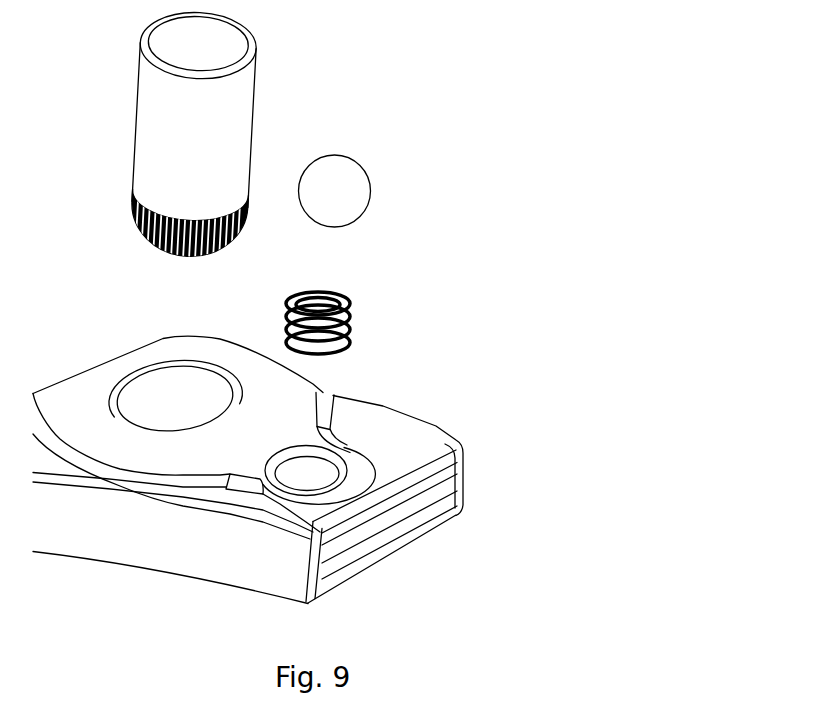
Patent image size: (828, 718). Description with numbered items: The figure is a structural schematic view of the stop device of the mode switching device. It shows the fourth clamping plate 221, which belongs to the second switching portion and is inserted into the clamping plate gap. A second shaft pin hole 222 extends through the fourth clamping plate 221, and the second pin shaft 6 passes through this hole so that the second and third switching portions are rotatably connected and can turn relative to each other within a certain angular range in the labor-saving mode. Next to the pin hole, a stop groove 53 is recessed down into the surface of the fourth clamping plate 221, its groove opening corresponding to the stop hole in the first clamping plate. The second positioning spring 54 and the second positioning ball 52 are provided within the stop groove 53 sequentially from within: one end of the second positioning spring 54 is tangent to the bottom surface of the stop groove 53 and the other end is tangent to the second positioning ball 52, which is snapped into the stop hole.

The second pin shaft 6 is at (157, 130).
The second positioning ball 52 is at (350, 190).
The stop groove 53 is at (302, 468).
The second positioning spring 54 is at (342, 328).
The fourth clamping plate 221 is at (170, 546).
The second shaft pin hole 222 is at (130, 380).